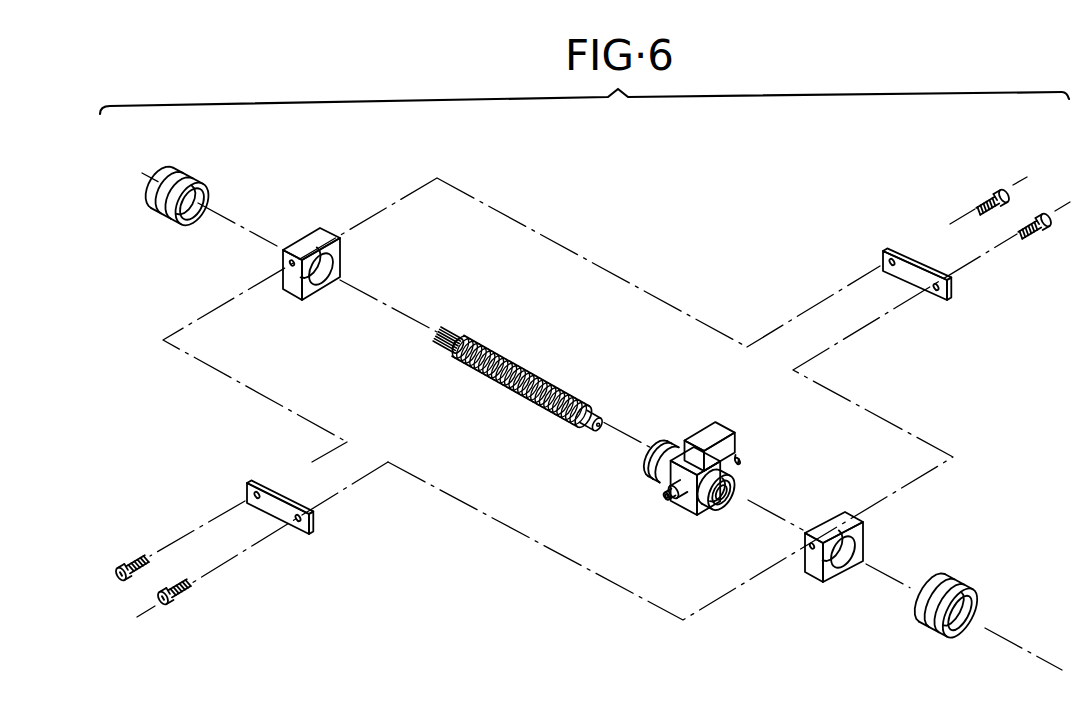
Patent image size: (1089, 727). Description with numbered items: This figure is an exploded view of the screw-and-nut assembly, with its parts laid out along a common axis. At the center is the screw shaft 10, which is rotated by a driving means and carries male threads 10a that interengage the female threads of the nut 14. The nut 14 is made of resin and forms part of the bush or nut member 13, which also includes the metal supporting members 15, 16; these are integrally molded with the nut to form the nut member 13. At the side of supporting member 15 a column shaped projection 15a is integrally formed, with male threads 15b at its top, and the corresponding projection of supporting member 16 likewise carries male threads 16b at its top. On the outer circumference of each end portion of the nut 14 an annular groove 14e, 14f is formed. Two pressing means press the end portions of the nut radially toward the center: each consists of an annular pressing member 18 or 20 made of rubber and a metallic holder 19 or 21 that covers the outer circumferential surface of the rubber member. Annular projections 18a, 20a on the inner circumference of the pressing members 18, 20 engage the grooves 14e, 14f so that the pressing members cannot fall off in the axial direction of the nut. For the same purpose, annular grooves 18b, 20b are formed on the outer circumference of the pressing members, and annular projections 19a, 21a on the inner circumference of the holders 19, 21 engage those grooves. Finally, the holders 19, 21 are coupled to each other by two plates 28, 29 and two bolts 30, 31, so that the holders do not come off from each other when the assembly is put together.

The screw shaft 10 is at (452, 366).
The male threads 10a is at (498, 382).
The nut member 13 is at (684, 436).
The nut 14 is at (666, 446).
The annular groove 14e is at (658, 474).
The annular groove 14f is at (706, 516).
The supporting member 15 is at (690, 518).
The column shaped projection 15a is at (666, 491).
The male threads 15b is at (664, 501).
The supporting member 16 is at (711, 440).
The male threads 16b is at (741, 458).
The annular pressing member 18 is at (160, 229).
The annular projection 18a is at (187, 216).
The annular groove 18b is at (146, 195).
The holder 19 is at (281, 301).
The annular projection 19a is at (317, 300).
The annular pressing member 20 is at (908, 615).
The annular projection 20a is at (974, 634).
The annular groove 20b is at (931, 636).
The holder 21 is at (808, 573).
The annular projection 21a is at (830, 580).
The plate 28 is at (280, 520).
The plate 29 is at (906, 290).
The bolt 30 is at (150, 564).
The bolt 31 is at (1034, 233).